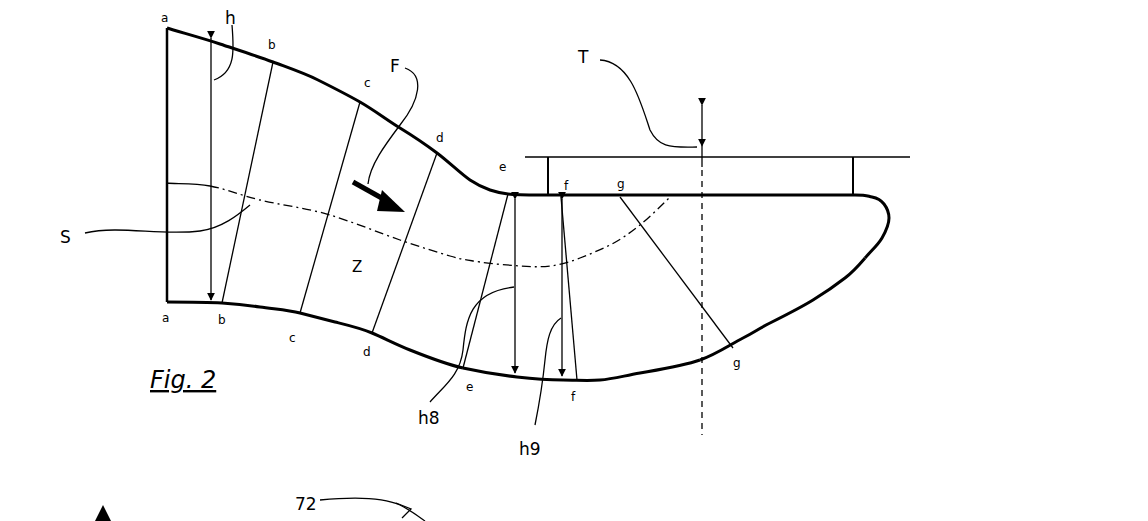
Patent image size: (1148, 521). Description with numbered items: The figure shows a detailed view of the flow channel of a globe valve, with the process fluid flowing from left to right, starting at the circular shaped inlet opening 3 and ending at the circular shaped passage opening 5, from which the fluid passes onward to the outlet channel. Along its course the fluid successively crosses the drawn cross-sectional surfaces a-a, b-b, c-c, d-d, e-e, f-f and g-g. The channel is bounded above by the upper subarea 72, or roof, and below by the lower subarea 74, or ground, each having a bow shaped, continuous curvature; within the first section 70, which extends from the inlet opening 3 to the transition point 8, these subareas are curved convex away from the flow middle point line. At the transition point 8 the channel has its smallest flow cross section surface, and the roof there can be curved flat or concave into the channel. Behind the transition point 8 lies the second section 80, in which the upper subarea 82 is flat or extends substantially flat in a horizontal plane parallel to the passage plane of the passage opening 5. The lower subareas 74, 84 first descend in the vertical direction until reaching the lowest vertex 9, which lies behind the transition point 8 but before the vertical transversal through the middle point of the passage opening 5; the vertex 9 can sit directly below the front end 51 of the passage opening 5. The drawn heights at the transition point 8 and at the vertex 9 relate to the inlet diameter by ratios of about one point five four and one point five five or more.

The inlet opening 3 is at (160, 128).
The passage opening 5 is at (712, 168).
The transition point 8 is at (505, 186).
The vertex 9 is at (563, 390).
The front end 51 is at (549, 176).
The first section 70 is at (356, 360).
The upper subarea 72 is at (359, 97).
The lower subarea 74 is at (294, 326).
The second section 80 is at (654, 388).
The upper subarea 82 is at (864, 212).
The lower subarea 84 is at (747, 326).